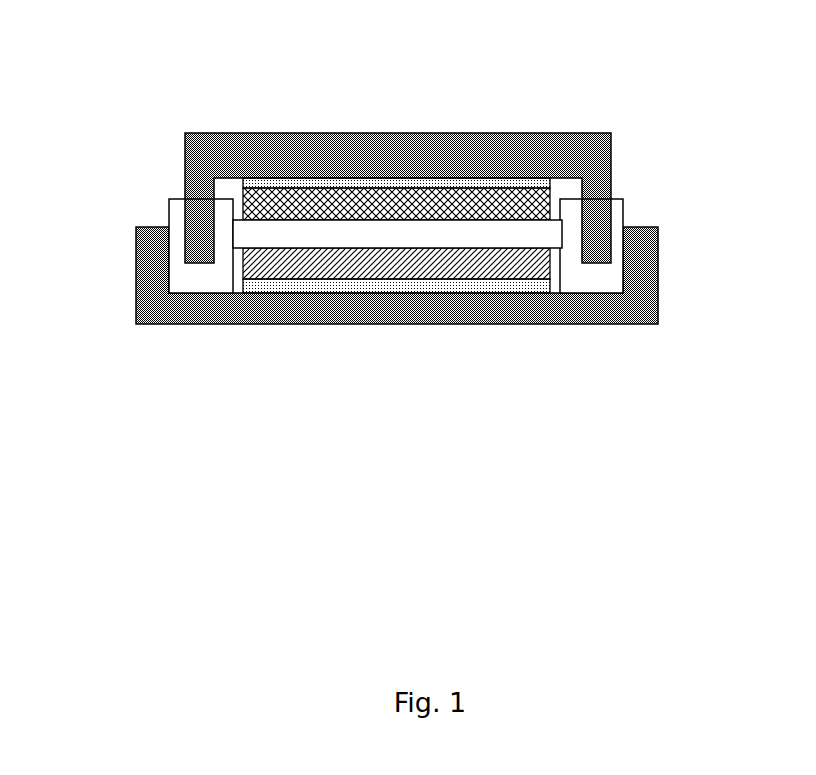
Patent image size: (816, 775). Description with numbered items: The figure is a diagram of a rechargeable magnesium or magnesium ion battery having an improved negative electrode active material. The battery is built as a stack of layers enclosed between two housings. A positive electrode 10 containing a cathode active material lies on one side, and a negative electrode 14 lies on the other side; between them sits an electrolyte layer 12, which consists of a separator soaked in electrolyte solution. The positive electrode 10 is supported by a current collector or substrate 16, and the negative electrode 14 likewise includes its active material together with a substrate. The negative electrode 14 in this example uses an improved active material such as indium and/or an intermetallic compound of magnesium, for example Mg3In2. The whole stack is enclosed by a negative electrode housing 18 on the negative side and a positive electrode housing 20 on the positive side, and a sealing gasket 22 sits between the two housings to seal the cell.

The positive electrode 10 is at (254, 284).
The electrolyte layer 12 is at (241, 230).
The negative electrode 14 is at (343, 194).
The current collector or substrate 16 is at (441, 175).
The negative electrode housing 18 is at (609, 136).
The positive electrode housing 20 is at (551, 332).
The sealing gasket 22 is at (625, 202).